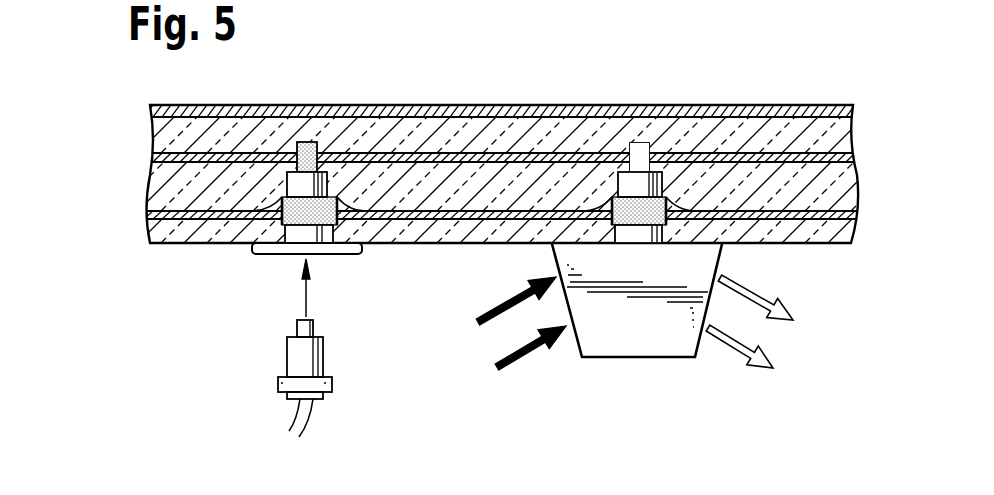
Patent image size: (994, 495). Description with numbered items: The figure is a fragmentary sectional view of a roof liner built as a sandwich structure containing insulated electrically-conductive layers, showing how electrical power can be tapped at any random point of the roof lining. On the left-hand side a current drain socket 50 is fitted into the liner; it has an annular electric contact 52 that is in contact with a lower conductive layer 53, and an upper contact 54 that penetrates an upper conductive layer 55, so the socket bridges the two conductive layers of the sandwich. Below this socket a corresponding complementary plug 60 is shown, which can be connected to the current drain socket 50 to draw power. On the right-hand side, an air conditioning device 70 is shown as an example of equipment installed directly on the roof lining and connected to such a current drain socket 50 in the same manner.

The current drain socket 50 is at (450, 169).
The annular electric contact 52 is at (267, 247).
The lower conductive layer 53 is at (160, 213).
The upper contact 54 is at (306, 142).
The upper conductive layer 55 is at (160, 155).
The complementary plug 60 is at (297, 357).
The air conditioning device 70 is at (636, 335).